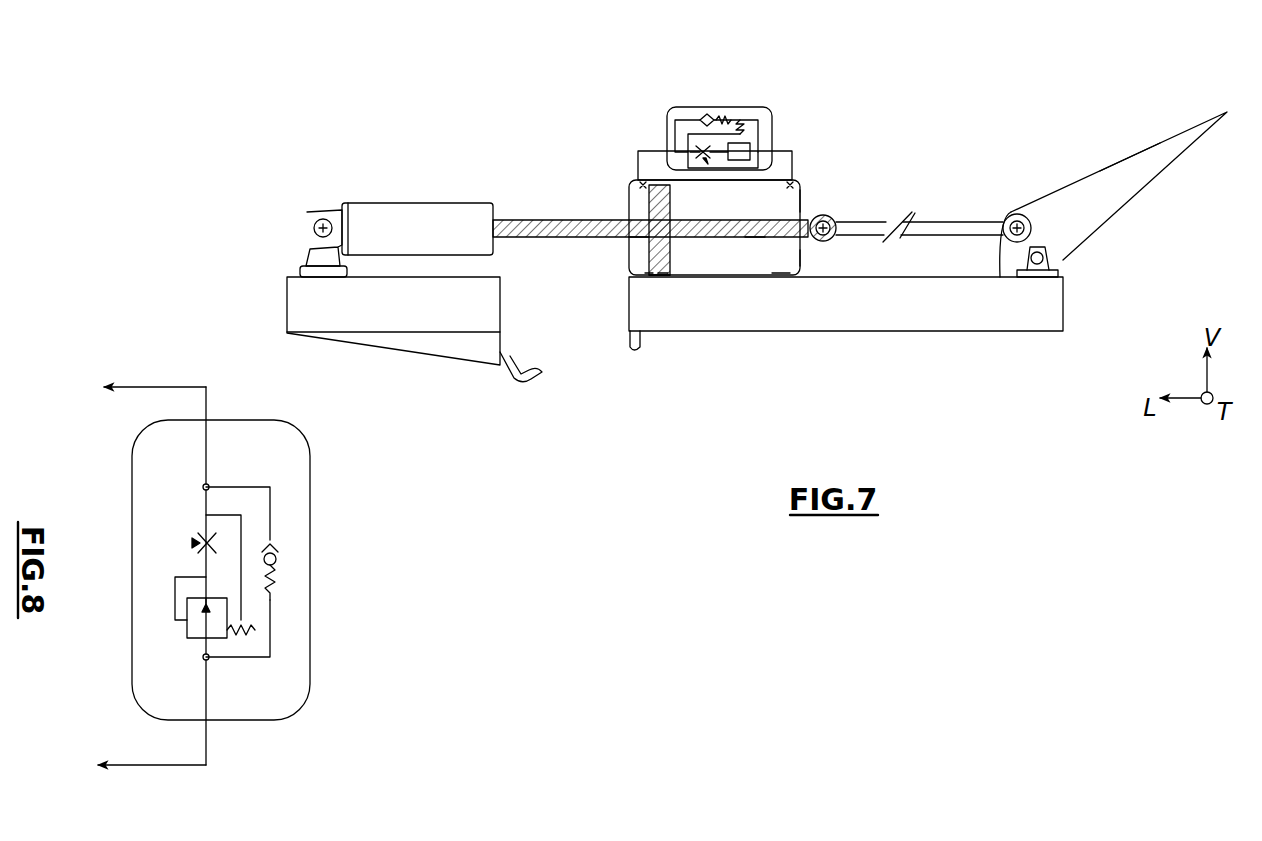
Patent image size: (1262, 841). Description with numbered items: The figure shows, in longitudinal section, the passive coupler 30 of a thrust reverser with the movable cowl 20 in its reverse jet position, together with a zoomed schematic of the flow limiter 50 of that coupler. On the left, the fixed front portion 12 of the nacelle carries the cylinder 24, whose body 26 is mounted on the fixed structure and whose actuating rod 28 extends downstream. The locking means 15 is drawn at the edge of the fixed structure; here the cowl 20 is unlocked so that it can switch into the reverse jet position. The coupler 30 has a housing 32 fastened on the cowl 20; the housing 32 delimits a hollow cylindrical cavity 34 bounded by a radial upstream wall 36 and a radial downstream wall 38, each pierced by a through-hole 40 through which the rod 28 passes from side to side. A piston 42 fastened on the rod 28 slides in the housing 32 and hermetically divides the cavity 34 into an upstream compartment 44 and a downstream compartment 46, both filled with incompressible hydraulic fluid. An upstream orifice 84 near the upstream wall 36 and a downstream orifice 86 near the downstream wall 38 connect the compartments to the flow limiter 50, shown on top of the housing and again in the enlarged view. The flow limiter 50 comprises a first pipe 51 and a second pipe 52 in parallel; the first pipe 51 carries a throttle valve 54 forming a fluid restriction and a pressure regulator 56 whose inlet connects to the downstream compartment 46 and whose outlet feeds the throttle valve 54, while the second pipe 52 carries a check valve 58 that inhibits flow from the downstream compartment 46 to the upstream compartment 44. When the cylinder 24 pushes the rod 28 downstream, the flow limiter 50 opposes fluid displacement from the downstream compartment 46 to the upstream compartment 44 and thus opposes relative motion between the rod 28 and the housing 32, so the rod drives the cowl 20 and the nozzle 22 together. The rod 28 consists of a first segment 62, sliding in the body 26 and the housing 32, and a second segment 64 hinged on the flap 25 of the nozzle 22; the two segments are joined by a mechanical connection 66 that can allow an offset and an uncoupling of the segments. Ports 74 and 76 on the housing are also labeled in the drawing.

In FIG. 7, the fixed front portion 12 is at (458, 318).
In FIG. 7, the locking means 15 is at (521, 390).
In FIG. 7, the cowl 20 is at (978, 326).
In FIG. 7, the nozzle 22 is at (1122, 188).
In FIG. 7, the cylinder 24 is at (369, 198).
In FIG. 7, the flap 25 is at (1133, 150).
In FIG. 7, the body 26 is at (445, 217).
In FIG. 7, the actuating rod 28 is at (551, 218).
In FIG. 7, the passive coupler 30 is at (838, 127).
In FIG. 7, the housing 32 is at (808, 200).
In FIG. 7, the cavity 34 is at (723, 258).
In FIG. 7, the radial upstream wall 36 is at (629, 197).
In FIG. 7, the radial downstream wall 38 is at (806, 258).
In FIG. 7, the through-hole 40 is at (630, 240).
In FIG. 7, the piston 42 is at (662, 277).
In FIG. 7, the upstream compartment 44 is at (640, 254).
In FIG. 7, the downstream compartment 46 is at (742, 204).
In FIG. 7, the flow limiter 50 is at (743, 104).
In FIG. 8, the flow limiter 50 is at (266, 722).
In FIG. 8, the first pipe 51 is at (206, 507).
In FIG. 8, the second pipe 52 is at (270, 507).
In FIG. 8, the throttle valve 54 is at (188, 543).
In FIG. 8, the pressure regulator 56 is at (178, 626).
In FIG. 8, the check valve 58 is at (282, 560).
In FIG. 7, the first segment 62 is at (755, 238).
In FIG. 7, the second segment 64 is at (960, 222).
In FIG. 7, the mechanical connection 66 is at (834, 222).
In FIG. 7, the first port 74 is at (647, 277).
In FIG. 7, the second port 76 is at (781, 277).
In FIG. 7, the upstream orifice 84 is at (643, 184).
In FIG. 8, the upstream orifice 84 is at (139, 427).
In FIG. 7, the downstream orifice 86 is at (790, 184).
In FIG. 8, the downstream orifice 86 is at (139, 718).